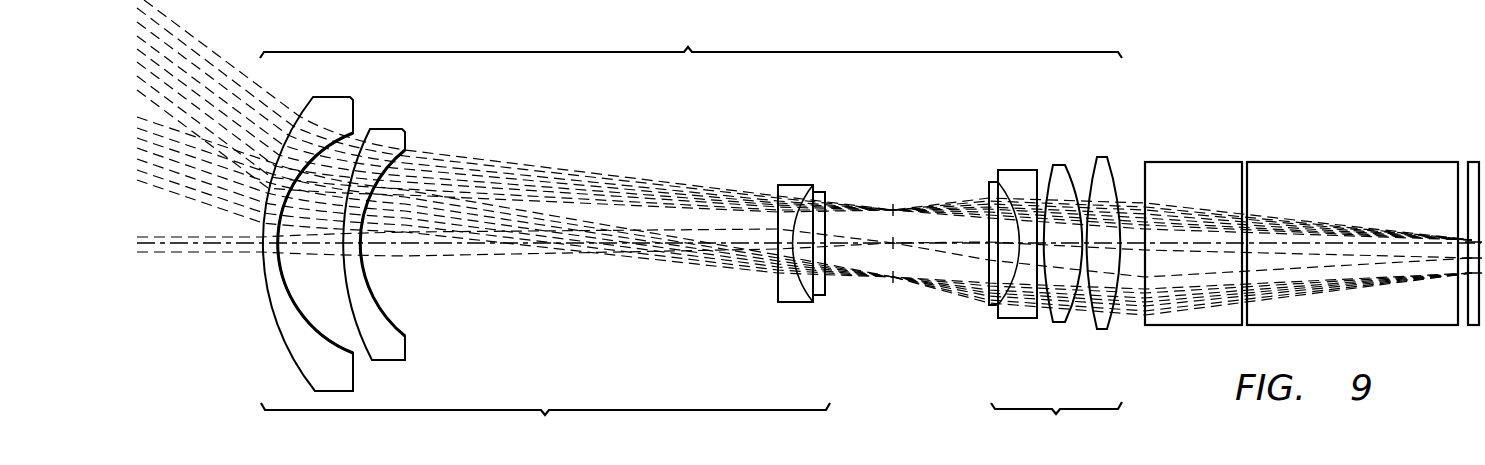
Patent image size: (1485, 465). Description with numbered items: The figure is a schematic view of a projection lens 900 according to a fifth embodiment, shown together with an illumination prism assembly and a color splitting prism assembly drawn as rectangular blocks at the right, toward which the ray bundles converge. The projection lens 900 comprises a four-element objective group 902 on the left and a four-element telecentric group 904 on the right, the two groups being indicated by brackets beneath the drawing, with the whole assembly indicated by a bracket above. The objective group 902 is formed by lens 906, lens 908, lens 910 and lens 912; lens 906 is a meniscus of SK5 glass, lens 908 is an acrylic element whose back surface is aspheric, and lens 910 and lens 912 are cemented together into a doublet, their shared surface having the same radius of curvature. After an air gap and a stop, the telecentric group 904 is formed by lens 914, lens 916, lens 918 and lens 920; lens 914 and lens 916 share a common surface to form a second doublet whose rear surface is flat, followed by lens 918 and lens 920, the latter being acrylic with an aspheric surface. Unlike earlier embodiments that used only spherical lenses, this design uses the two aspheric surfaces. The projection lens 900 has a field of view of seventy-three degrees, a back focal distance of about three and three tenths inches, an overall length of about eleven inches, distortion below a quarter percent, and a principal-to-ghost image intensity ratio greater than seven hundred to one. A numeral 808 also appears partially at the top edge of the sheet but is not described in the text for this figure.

The projection lens 900 is at (691, 35).
The four-element objective group 902 is at (545, 425).
The four-element telecentric group 904 is at (1056, 424).
The lens 906 is at (277, 306).
The lens 908 is at (407, 348).
The lens 910 is at (795, 185).
The lens 912 is at (826, 291).
The lens 914 is at (989, 187).
The lens 916 is at (1017, 170).
The lens 918 is at (1053, 323).
The lens 920 is at (1103, 158).
The imaging system 808 is at (527, 6).